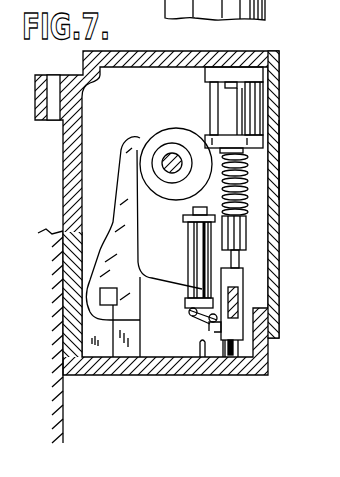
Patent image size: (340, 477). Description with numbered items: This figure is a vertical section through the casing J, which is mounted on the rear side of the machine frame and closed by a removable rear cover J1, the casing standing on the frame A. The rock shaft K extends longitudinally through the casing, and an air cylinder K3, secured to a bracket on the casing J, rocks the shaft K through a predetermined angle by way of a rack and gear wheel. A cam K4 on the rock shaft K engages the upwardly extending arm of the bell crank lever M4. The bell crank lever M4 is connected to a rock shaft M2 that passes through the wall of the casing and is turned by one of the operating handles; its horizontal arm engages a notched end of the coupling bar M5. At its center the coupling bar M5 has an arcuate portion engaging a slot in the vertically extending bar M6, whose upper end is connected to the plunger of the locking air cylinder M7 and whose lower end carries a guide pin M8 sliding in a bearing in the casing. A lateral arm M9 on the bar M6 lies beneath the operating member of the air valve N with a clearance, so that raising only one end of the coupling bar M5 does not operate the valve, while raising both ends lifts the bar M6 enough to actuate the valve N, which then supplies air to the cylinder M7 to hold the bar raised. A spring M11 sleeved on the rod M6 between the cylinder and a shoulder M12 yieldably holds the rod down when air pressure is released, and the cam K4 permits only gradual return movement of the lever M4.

The casing J is at (136, 50).
The removable rear cover J1 is at (281, 158).
The frame A is at (62, 428).
The rock shaft K is at (171, 153).
The air cylinder K3 is at (264, 9).
The cam K4 is at (178, 129).
The rock shaft M2 is at (115, 320).
The bell crank lever M4 is at (128, 200).
The coupling bar M5 is at (244, 283).
The vertically extending bar M6 is at (243, 260).
The air cylinder M7 is at (237, 117).
The guide pin M8 is at (235, 352).
The lateral arm M9 is at (219, 334).
The spring M11 is at (253, 190).
The shoulder M12 is at (242, 226).
The air valve N is at (188, 243).